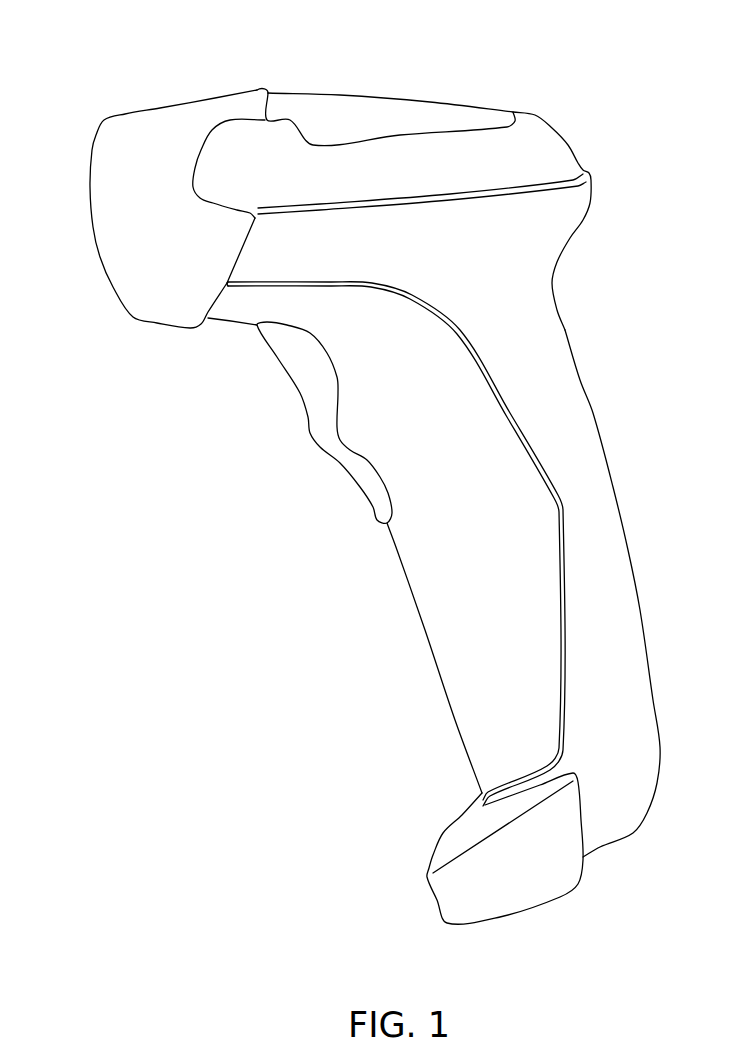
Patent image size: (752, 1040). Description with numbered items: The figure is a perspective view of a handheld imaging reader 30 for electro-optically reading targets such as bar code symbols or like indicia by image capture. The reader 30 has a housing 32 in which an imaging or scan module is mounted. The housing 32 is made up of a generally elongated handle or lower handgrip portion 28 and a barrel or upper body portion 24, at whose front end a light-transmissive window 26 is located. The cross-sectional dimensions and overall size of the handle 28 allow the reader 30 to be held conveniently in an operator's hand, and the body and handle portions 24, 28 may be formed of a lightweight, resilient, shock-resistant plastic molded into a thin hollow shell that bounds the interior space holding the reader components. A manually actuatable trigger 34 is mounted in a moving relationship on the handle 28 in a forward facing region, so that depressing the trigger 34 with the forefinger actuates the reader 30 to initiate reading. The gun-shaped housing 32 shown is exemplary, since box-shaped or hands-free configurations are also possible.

The handheld imaging reader 30 is at (605, 66).
The upper body portion 24 is at (557, 150).
The light-transmissive window 26 is at (93, 228).
The handle 28 is at (613, 487).
The housing 32 is at (420, 89).
The trigger 34 is at (321, 438).